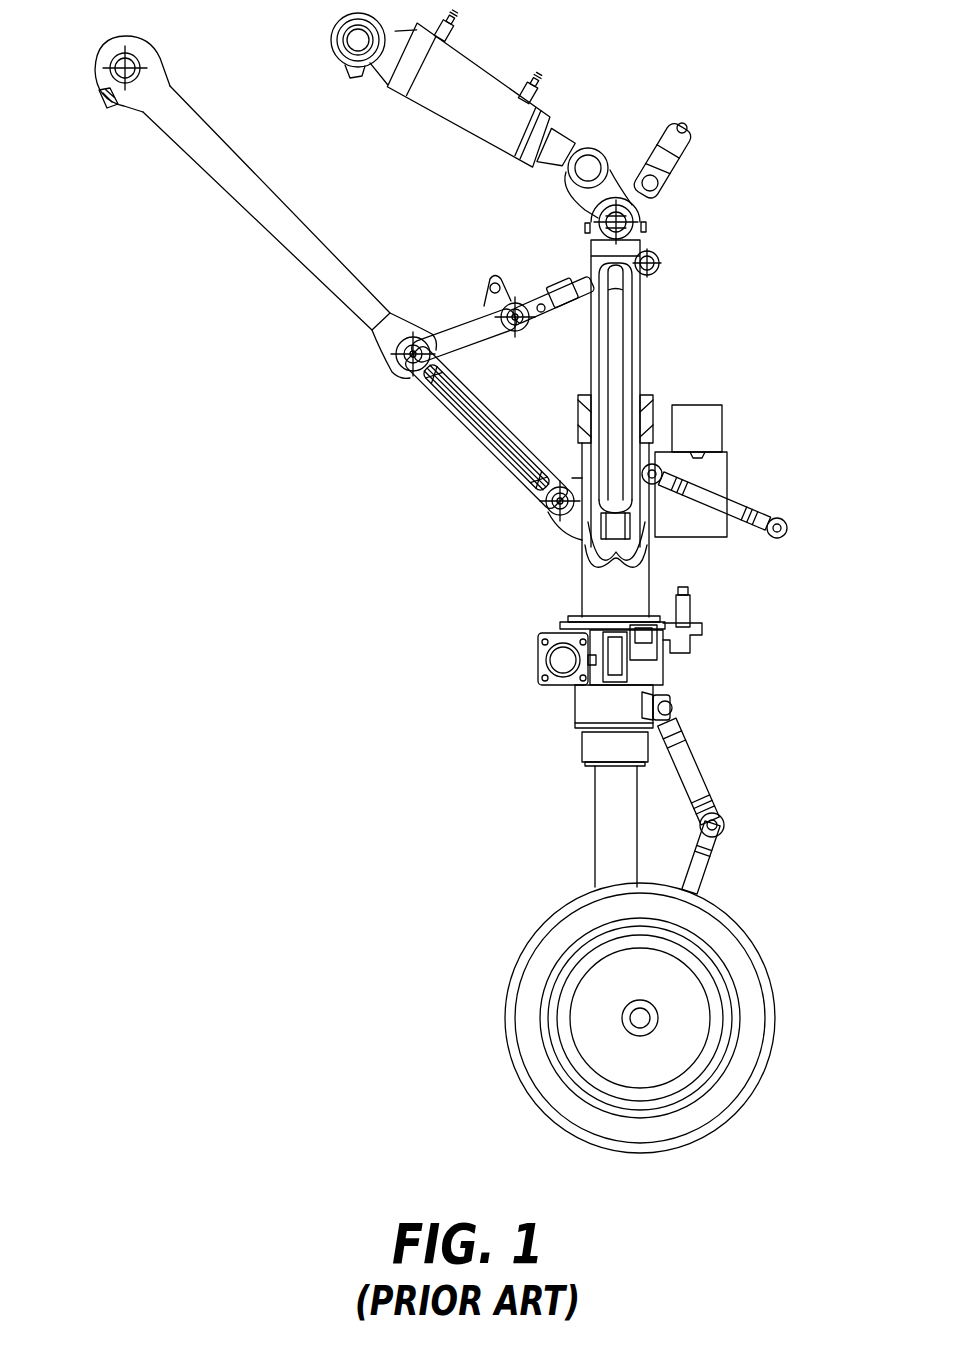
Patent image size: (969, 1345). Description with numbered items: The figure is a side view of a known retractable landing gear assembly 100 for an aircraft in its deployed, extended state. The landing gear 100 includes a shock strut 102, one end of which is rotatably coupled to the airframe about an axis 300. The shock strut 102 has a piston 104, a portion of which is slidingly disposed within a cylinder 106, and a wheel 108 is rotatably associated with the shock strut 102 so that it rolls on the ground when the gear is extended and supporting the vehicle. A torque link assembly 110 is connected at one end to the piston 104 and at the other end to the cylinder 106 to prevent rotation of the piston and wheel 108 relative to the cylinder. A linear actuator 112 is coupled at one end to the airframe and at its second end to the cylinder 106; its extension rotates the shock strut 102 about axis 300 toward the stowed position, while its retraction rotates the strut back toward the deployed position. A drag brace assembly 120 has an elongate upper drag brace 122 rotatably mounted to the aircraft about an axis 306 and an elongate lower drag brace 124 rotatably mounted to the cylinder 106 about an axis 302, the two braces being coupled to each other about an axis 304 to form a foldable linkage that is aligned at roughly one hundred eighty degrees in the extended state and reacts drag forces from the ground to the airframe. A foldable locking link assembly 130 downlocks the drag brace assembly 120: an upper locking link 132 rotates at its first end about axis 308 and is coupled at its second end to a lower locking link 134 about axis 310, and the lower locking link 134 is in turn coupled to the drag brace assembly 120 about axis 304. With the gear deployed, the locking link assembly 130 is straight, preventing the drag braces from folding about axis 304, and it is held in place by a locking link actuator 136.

The retractable landing gear assembly 100 is at (738, 51).
The shock strut 102 is at (554, 747).
The piston 104 is at (600, 832).
The cylinder 106 is at (580, 597).
The wheel 108 is at (755, 952).
The torque link assembly 110 is at (718, 791).
The linear actuator 112 is at (472, 80).
The drag brace assembly 120 is at (300, 306).
The upper drag brace 122 is at (268, 225).
The lower drag brace 124 is at (485, 437).
The locking link assembly 130 is at (481, 272).
The upper locking link 132 is at (558, 275).
The lower locking link 134 is at (447, 335).
The locking link actuator 136 is at (670, 158).
The axis 300 is at (633, 228).
The axis 302 is at (553, 518).
The axis 304 is at (407, 367).
The axis 306 is at (117, 42).
The axis 308 is at (652, 274).
The axis 310 is at (512, 335).